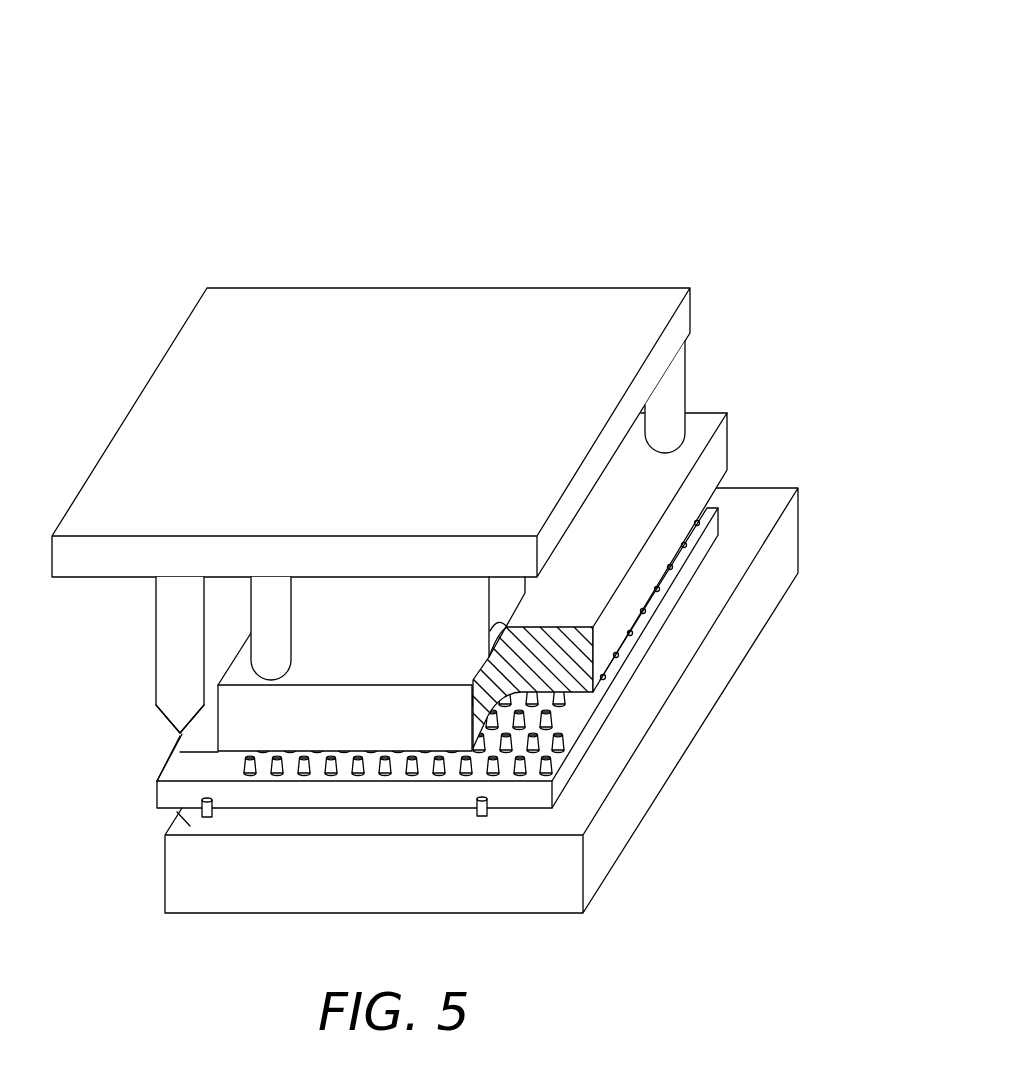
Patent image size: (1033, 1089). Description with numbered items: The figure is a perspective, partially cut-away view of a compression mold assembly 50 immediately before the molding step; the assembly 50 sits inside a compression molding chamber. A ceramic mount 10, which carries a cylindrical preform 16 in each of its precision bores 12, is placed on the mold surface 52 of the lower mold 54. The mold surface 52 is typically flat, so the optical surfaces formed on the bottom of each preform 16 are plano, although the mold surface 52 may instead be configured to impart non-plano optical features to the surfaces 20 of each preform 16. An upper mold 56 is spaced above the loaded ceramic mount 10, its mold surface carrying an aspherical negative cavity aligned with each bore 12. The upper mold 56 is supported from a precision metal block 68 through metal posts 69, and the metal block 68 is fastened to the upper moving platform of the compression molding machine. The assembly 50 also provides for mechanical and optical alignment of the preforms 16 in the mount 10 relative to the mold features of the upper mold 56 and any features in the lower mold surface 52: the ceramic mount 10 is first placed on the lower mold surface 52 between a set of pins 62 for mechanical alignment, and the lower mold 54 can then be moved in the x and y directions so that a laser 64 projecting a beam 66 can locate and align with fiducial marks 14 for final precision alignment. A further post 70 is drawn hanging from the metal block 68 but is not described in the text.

The compression mold assembly 50 is at (457, 488).
The precision metal block 68 is at (498, 300).
The metal posts 69 is at (680, 386).
The upper mold 56 is at (722, 452).
The surfaces of preform 20 is at (718, 525).
The ceramic mount 10 is at (472, 699).
The lower mold 54 is at (645, 780).
The laser 64 is at (165, 665).
The beam 66 is at (177, 777).
The fiducial marks 14 is at (185, 775).
The mold surface 52 is at (178, 815).
The pins 62 is at (212, 816).
The cylindrical preform 16 is at (360, 775).
The precision bore 12 is at (360, 770).
The pin 70 is at (285, 620).